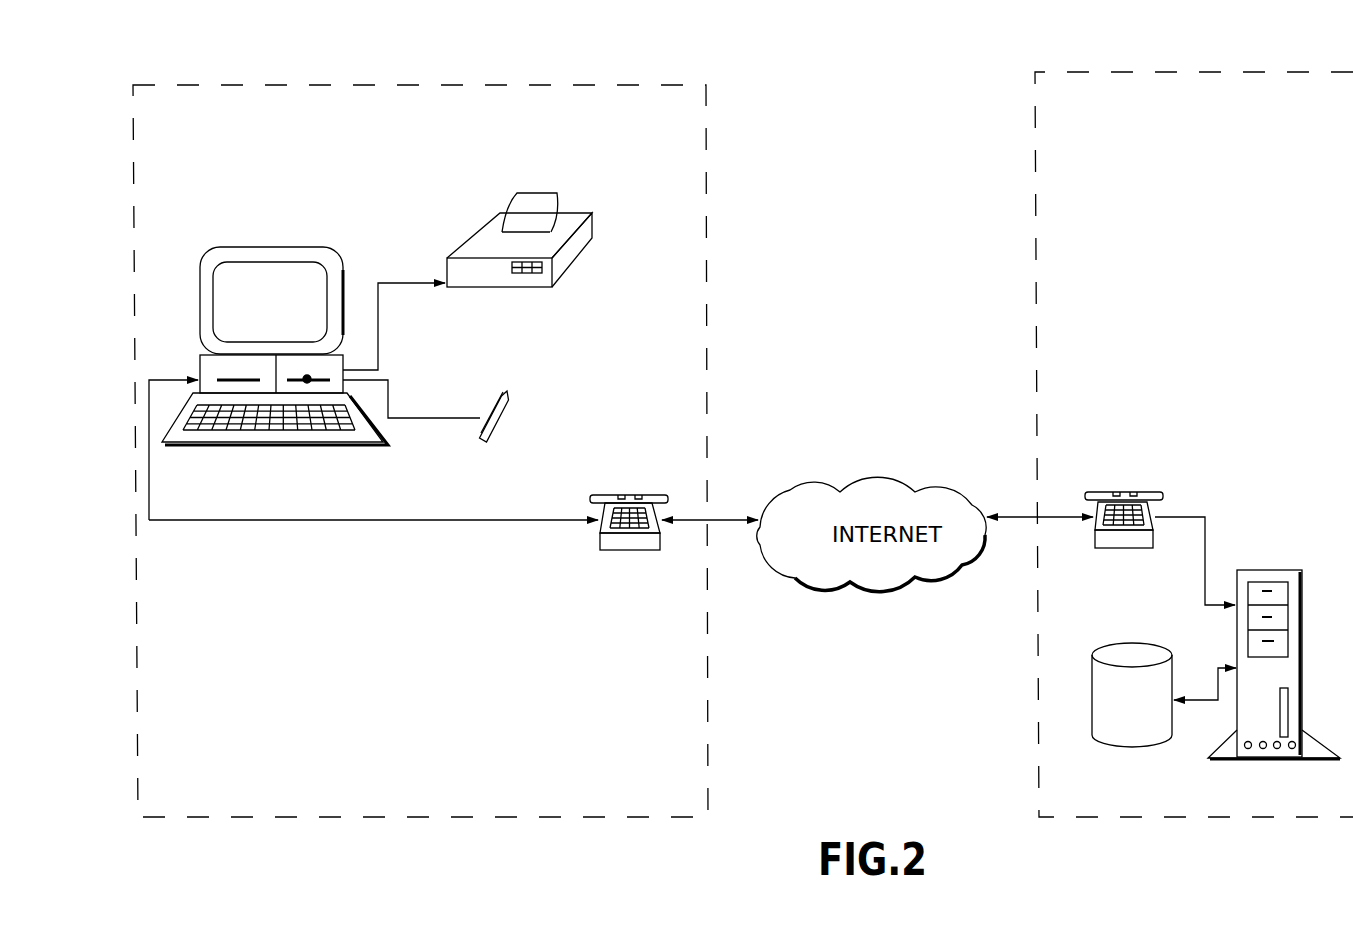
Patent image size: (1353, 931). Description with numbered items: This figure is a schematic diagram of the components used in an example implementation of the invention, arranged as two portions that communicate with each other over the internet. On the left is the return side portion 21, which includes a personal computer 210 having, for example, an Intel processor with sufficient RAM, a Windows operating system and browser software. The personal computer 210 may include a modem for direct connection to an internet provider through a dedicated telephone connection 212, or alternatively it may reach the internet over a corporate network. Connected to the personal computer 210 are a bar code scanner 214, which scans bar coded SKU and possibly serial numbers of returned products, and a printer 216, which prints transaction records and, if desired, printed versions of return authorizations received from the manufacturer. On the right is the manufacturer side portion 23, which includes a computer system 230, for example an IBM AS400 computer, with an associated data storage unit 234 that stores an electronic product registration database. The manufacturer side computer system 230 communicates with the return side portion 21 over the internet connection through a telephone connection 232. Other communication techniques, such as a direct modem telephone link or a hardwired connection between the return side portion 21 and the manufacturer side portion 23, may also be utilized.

The return side portion 21 is at (313, 113).
The manufacturer side portion 23 is at (1117, 112).
The personal computer 210 is at (258, 272).
The dedicated telephone connection 212 is at (605, 500).
The bar code scanner 214 is at (503, 418).
The printer 216 is at (583, 232).
The computer system 230 is at (1295, 640).
The telephone connection 232 is at (1127, 535).
The data storage unit 234 is at (1147, 648).